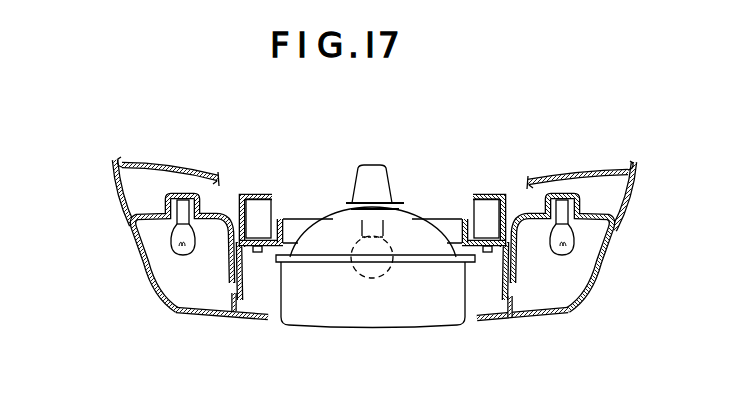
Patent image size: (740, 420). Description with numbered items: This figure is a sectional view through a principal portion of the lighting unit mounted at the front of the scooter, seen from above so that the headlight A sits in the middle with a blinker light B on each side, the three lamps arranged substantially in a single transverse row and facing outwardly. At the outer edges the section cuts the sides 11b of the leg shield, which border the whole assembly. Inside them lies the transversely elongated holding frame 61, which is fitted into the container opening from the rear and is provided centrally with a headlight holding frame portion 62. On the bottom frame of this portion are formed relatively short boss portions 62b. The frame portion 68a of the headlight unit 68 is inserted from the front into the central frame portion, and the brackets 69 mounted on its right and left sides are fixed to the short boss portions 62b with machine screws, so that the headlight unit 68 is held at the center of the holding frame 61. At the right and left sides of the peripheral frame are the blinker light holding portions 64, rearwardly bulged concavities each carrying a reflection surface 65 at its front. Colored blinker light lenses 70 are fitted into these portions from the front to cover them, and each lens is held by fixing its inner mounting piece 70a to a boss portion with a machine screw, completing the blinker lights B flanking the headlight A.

The sides of leg shield 11b is at (112, 180).
The holding frame 61 is at (466, 190).
The headlight holding frame portion 62 is at (261, 210).
The short boss portions 62b is at (279, 197).
The blinker light holding portions 64 is at (137, 237).
The reflection surface 65 is at (137, 237).
The headlight unit 68 is at (354, 322).
The frame portion of headlight unit 68a is at (292, 219).
The brackets 69 is at (258, 253).
The colored blinker light lenses 70 is at (178, 314).
The inner mounting pieces 70a is at (256, 321).
The headlight A is at (400, 335).
The blinker lights B is at (145, 296).